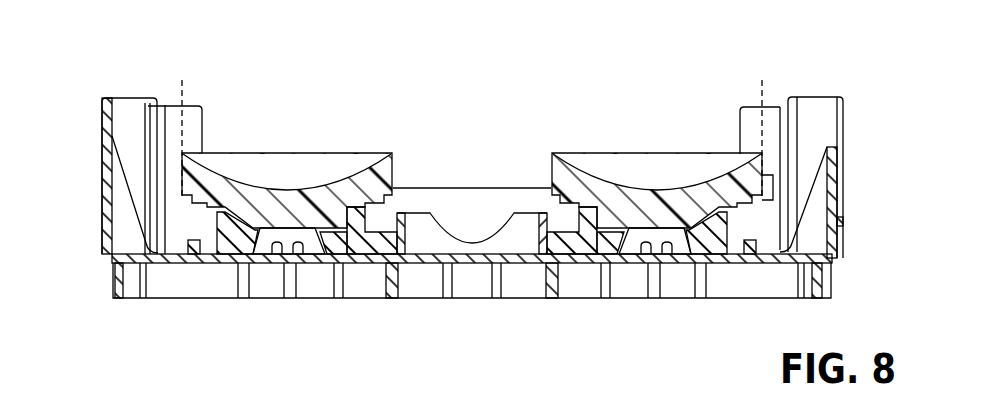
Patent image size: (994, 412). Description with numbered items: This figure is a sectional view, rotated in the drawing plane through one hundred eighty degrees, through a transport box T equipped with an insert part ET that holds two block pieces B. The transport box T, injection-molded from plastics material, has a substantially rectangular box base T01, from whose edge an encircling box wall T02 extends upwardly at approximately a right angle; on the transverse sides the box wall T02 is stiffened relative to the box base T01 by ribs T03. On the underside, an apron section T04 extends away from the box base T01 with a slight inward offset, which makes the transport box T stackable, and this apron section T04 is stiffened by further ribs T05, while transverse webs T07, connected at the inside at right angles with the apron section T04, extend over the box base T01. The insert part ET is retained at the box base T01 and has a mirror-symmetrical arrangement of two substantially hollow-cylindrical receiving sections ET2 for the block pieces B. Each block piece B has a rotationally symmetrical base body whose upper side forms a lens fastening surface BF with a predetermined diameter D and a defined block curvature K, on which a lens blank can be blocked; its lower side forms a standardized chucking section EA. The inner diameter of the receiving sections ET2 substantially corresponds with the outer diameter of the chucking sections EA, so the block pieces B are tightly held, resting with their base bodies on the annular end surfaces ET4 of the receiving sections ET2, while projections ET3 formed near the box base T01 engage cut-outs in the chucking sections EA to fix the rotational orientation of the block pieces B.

The transport box T is at (822, 63).
The box base T01 is at (407, 259).
The box wall T02 is at (108, 146).
The ribs T03 is at (127, 230).
The apron section T04 is at (118, 273).
The ribs T05 is at (703, 283).
The transverse webs T07 is at (553, 282).
The block piece B is at (396, 166).
The lens fastening surface BF is at (305, 188).
The block curvature K is at (236, 178).
The diameter D is at (200, 88).
The chucking section EA is at (234, 222).
The insert part ET is at (368, 246).
The receiving sections ET2 is at (219, 209).
The projections ET3 is at (249, 249).
The annular end surfaces ET4 is at (358, 205).